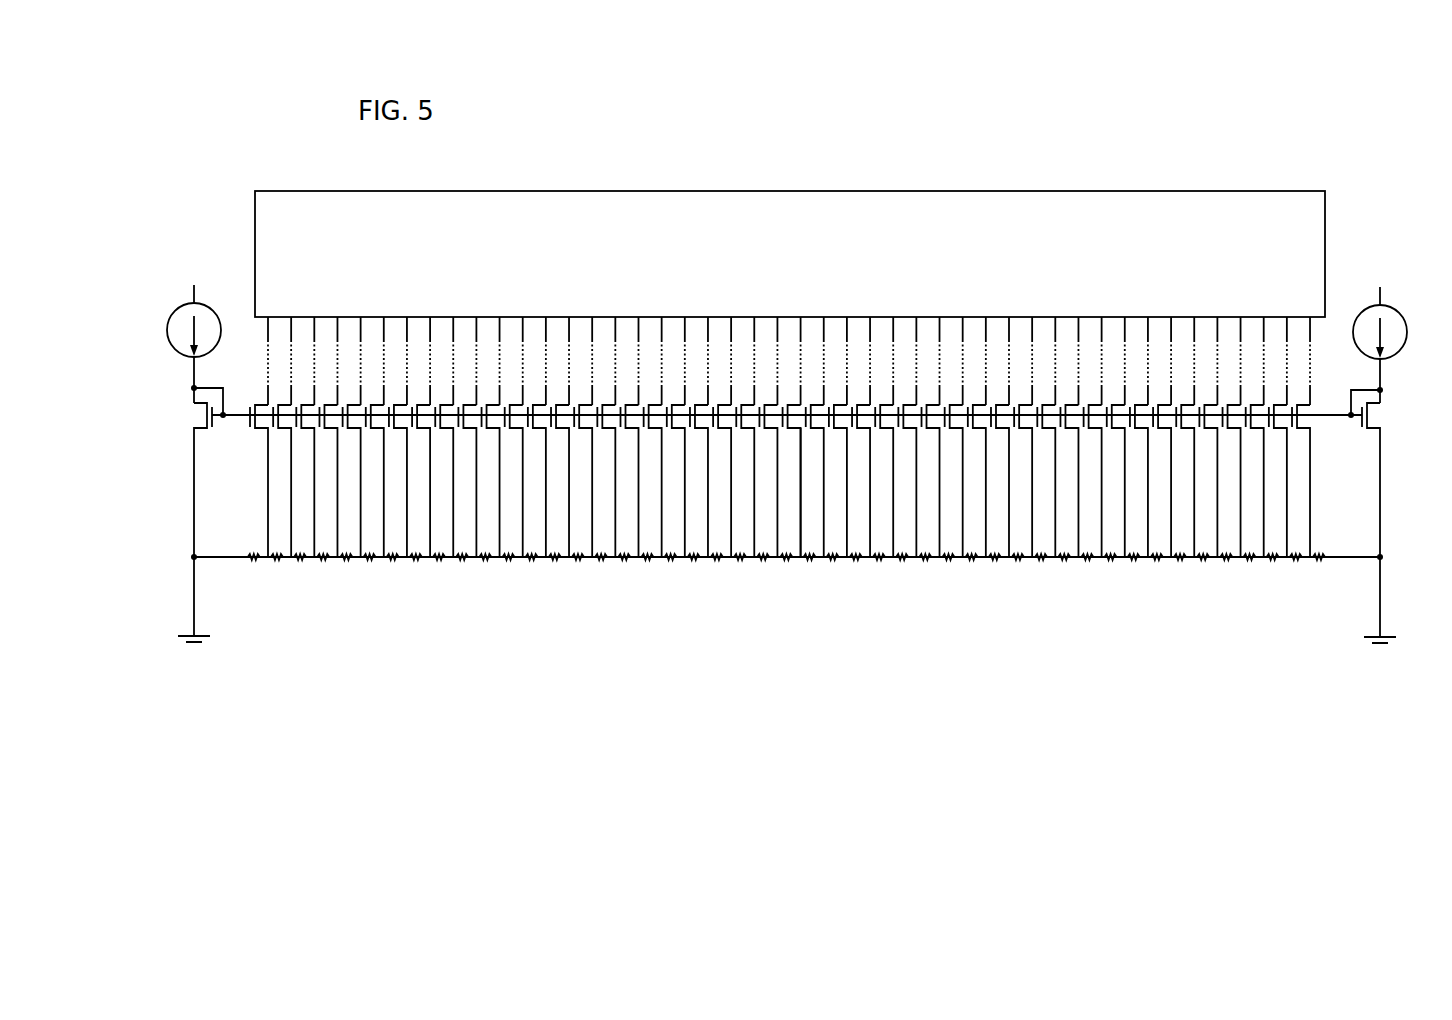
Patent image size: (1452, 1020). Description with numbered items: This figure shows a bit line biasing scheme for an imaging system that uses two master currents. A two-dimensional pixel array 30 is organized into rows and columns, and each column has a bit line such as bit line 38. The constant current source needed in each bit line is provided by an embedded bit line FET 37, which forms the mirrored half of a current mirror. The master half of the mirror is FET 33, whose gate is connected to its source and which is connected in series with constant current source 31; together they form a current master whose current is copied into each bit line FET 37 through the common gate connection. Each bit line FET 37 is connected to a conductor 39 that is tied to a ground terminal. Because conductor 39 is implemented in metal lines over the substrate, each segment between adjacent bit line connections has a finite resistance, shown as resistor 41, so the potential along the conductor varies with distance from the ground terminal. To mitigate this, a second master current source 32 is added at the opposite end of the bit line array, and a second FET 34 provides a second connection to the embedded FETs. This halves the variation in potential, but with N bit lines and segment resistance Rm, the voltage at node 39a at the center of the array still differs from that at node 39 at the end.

The pixel array 30 is at (860, 200).
The constant current source 31 is at (1398, 312).
The second master current source 32 is at (203, 312).
The FET 33 is at (1380, 405).
The second FET 34 is at (200, 424).
The bit line FET 37 is at (1310, 427).
The bit line 38 is at (1195, 327).
The conductor 39 is at (1358, 557).
The node 39a is at (801, 542).
The resistor 41 is at (1087, 558).